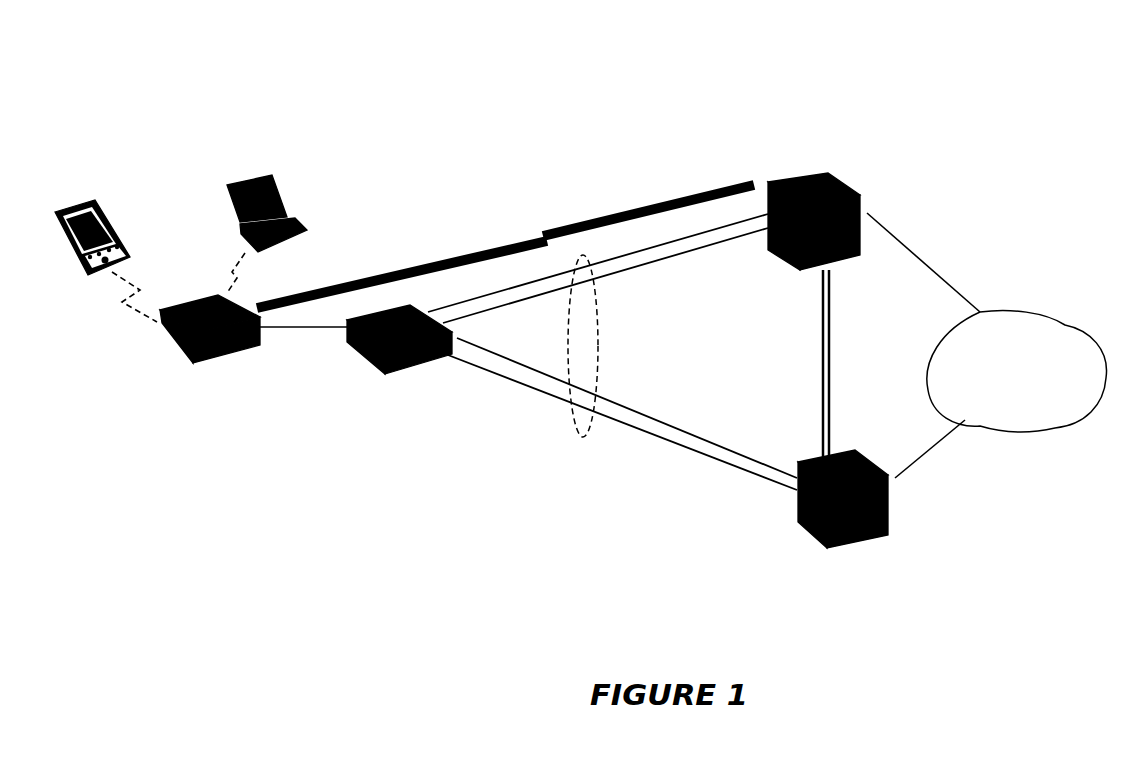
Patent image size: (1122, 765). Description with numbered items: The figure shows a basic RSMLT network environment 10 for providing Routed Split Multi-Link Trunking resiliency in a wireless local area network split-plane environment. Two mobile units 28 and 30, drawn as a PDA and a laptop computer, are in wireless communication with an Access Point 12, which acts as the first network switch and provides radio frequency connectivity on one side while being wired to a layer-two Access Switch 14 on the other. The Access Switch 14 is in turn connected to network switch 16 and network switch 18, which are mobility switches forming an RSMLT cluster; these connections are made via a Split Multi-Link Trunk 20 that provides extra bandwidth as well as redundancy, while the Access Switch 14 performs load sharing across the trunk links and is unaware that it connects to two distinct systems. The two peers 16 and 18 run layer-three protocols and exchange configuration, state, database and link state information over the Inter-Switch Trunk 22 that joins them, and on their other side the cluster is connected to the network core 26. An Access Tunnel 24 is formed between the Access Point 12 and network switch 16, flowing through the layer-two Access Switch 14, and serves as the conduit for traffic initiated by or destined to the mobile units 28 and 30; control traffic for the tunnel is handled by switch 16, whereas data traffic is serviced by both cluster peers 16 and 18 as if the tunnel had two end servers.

The RSMLT network environment 10 is at (153, 44).
The Access Point 12 is at (253, 355).
The Access Switch 14 is at (430, 365).
The network switch 16 is at (874, 220).
The network switch 18 is at (885, 505).
The Split Multi-Link Trunk 20 is at (612, 352).
The Inter-Switch Trunk 22 is at (868, 366).
The Access Tunnel 24 is at (505, 237).
The network core 26 is at (1026, 372).
The mobile unit 28 is at (131, 233).
The mobile unit 30 is at (310, 211).